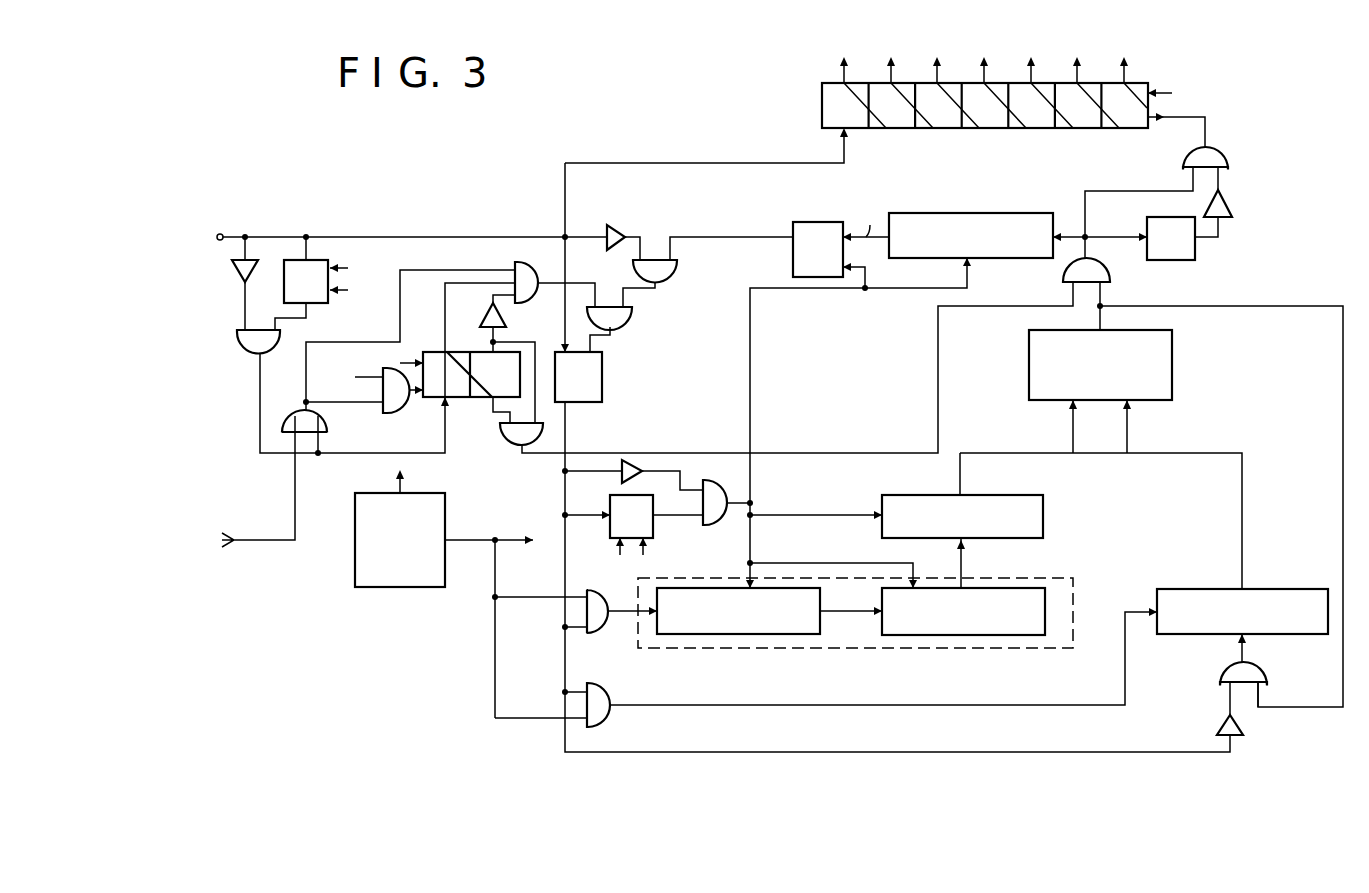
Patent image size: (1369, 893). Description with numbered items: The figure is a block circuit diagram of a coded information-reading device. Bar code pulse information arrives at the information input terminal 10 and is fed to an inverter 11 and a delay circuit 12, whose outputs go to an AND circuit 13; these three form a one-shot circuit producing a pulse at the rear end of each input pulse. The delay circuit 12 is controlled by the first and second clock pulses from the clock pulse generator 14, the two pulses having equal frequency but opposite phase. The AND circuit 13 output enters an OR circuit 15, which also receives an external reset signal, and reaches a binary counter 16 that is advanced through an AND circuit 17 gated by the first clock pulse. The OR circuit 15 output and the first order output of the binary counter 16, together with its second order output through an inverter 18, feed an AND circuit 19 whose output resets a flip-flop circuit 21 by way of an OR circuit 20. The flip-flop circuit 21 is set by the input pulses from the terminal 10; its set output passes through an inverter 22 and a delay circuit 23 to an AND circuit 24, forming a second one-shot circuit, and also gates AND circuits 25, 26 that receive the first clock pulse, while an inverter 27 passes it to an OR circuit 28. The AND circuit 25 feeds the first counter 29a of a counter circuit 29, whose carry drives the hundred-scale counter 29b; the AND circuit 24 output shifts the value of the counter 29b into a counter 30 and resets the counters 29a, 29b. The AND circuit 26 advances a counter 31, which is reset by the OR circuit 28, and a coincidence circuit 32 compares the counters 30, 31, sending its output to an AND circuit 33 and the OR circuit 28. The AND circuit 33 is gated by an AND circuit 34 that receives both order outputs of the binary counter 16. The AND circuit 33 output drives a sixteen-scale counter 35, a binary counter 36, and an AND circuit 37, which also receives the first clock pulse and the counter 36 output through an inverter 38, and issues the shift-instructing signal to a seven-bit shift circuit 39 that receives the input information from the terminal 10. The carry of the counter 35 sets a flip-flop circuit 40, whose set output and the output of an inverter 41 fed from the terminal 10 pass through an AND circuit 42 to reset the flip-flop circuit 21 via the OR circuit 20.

The information input terminal 10 is at (217, 238).
The inverter 11 is at (234, 268).
The delay circuit 12 is at (286, 294).
The AND circuit 13 is at (243, 348).
The clock pulse generator 14 is at (355, 505).
The OR circuit 15 is at (326, 422).
The binary counter 16 is at (470, 397).
The AND circuit 17 is at (405, 410).
The inverter 18 is at (506, 318).
The AND circuit 19 is at (530, 265).
The OR circuit 20 is at (625, 320).
The flip-flop circuit 21 is at (602, 390).
The inverter 22 is at (634, 460).
The delay circuit 23 is at (610, 506).
The AND circuit 24 is at (722, 488).
The AND circuit 25 is at (602, 630).
The AND circuit 26 is at (598, 686).
The inverter 27 is at (1240, 728).
The OR circuit 28 is at (1220, 682).
The counter circuit 29 is at (862, 648).
The first counter 29a is at (797, 634).
The 100-scale counter 29b is at (1030, 635).
The 100-scale counter 30 is at (1043, 517).
The 100-scale counter 31 is at (1208, 589).
The coincidence circuit 32 is at (1172, 370).
The AND circuit 33 is at (1104, 266).
The AND circuit 34 is at (503, 443).
The 16-scale counter 35 is at (1000, 213).
The binary counter 36 is at (1193, 259).
The AND circuit 37 is at (1226, 155).
The inverter 38 is at (1231, 212).
The 7-bit shift circuit 39 is at (1009, 106).
The flip-flop circuit 40 is at (793, 228).
The inverter 41 is at (618, 225).
The AND circuit 42 is at (670, 272).